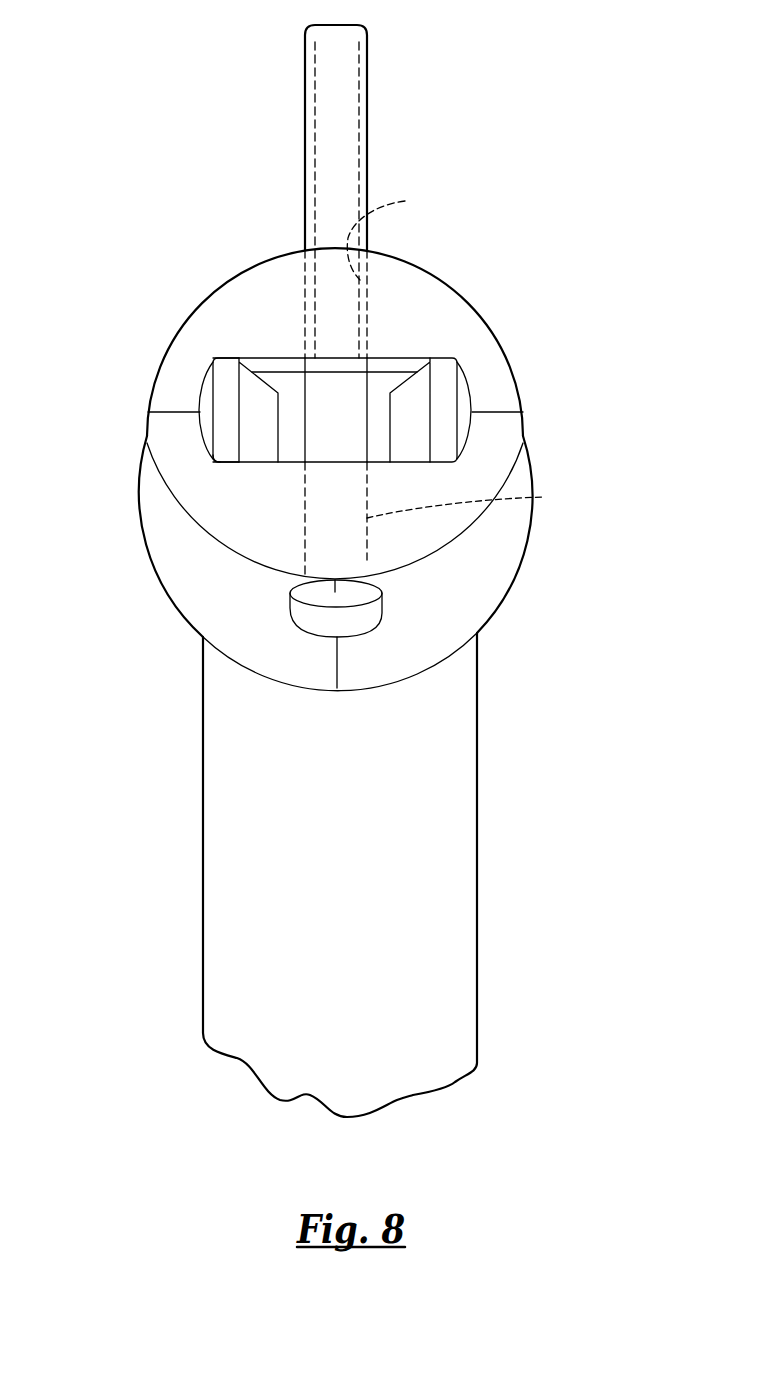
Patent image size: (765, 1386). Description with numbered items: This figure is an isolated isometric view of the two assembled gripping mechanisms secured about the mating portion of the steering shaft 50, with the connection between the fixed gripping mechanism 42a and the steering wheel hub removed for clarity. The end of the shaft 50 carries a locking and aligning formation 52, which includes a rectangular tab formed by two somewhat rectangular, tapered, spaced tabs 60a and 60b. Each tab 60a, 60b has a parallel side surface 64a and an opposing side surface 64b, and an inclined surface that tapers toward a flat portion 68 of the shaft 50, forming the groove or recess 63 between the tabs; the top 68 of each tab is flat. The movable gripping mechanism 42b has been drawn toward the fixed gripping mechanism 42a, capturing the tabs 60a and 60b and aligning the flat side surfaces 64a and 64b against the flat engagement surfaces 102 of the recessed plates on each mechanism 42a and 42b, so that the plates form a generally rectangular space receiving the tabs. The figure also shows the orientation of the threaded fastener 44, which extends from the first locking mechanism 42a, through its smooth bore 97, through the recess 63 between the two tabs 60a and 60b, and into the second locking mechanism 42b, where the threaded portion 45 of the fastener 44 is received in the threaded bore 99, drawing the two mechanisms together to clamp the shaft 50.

The threaded portion 45 is at (358, 98).
The threaded bore 99 is at (398, 232).
The flat portion 68 is at (290, 407).
The groove or bore 63 is at (385, 382).
The flat engagement surface 102 is at (257, 358).
The opposing side surface 64b is at (440, 368).
The movable gripping mechanism 42b is at (522, 345).
The tab 60a is at (252, 407).
The tab 60b is at (446, 410).
The smooth bore 97 is at (474, 500).
The locking and aligning formation 52 is at (243, 473).
The parallel side surface 64a is at (267, 467).
The fixed gripping mechanism 42a is at (207, 560).
The threaded fastener 44 is at (330, 611).
The steering shaft 50 is at (218, 790).